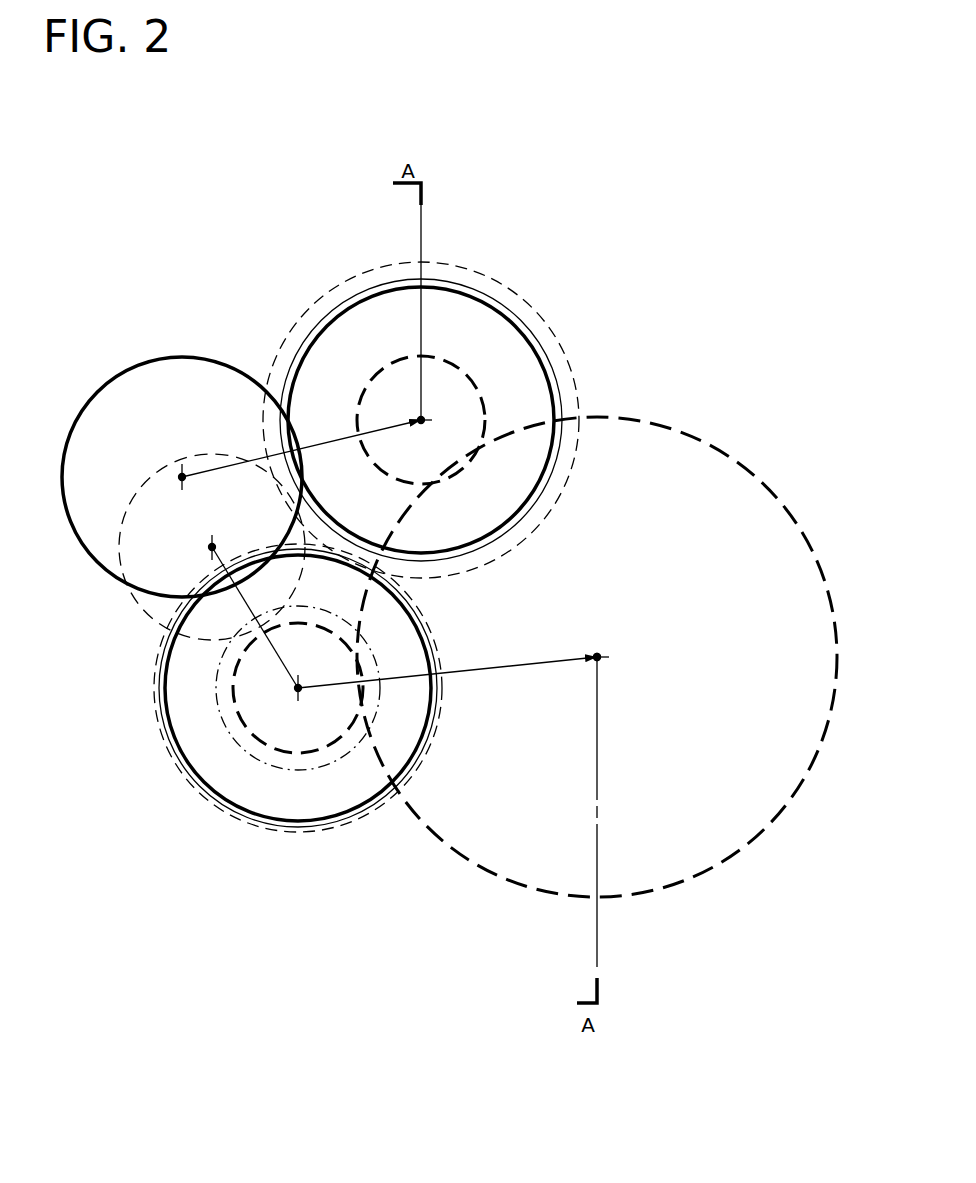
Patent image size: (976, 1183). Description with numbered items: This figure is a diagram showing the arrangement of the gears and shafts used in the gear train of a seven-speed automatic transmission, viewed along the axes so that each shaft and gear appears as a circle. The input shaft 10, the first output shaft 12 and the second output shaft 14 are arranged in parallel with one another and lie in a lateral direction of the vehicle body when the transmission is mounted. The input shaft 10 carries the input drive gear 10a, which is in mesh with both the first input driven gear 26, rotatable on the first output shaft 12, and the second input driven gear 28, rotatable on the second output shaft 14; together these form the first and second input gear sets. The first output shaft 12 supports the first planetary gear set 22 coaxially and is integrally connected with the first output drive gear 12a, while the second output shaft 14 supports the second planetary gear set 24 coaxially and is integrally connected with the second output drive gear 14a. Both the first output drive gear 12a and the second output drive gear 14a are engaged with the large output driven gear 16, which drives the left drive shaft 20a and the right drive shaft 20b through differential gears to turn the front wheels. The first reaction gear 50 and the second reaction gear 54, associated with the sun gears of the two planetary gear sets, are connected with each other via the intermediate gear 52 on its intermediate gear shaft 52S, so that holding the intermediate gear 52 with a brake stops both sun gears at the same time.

The input shaft 10 is at (212, 547).
The input drive gear 10a is at (212, 547).
The first output shaft 12 is at (421, 420).
The first output drive gear 12a is at (458, 370).
The second output shaft 14 is at (298, 688).
The second output drive gear 14a is at (313, 752).
The output driven gear 16 is at (723, 452).
The left drive shaft 20a is at (597, 657).
The right drive shaft 20b is at (597, 657).
The first planetary gear set 22 is at (500, 297).
The second planetary gear set 24 is at (289, 828).
The first input driven gear 26 is at (338, 285).
The second input driven gear 28 is at (238, 747).
The first reaction gear 50 is at (467, 288).
The intermediate gear 52 is at (102, 385).
The intermediate gear shaft 52S is at (182, 477).
The second reaction gear 54 is at (158, 713).